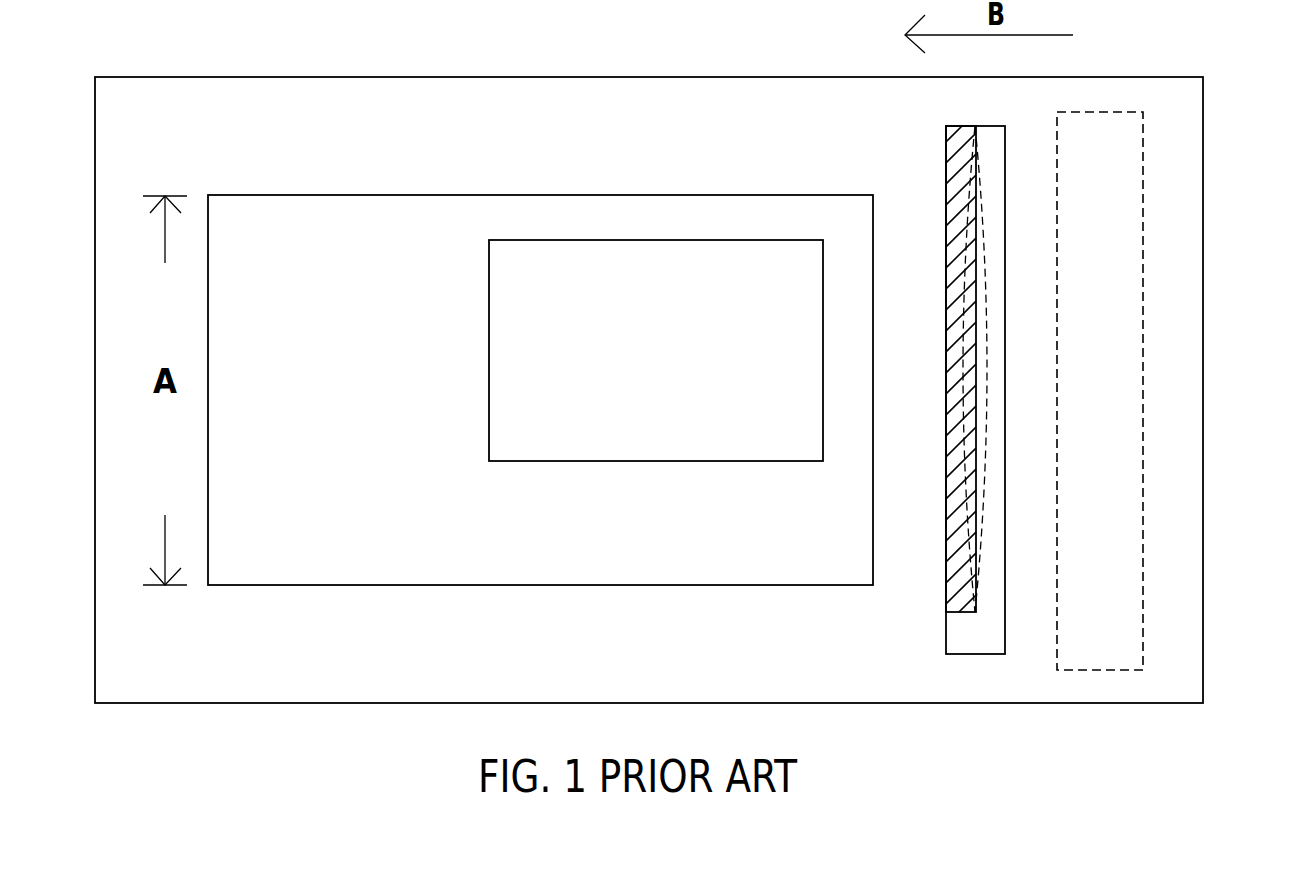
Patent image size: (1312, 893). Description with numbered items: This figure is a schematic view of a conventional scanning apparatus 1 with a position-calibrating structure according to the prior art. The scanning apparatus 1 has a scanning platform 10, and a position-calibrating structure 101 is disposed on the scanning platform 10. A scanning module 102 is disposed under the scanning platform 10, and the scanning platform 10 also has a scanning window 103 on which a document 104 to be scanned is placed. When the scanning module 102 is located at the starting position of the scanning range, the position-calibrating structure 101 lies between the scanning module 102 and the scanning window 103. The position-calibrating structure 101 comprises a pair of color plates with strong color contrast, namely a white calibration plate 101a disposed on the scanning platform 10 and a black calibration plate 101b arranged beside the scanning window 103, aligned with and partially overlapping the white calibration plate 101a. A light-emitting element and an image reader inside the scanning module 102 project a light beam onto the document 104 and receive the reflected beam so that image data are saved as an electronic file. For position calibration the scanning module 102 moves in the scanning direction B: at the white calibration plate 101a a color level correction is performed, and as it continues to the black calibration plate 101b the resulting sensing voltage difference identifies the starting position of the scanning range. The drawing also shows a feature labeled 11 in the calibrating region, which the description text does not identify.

The scanning apparatus 1 is at (1253, 40).
The scanning platform 10 is at (1203, 107).
The light beam 11 is at (980, 147).
The position-calibrating structure 101 is at (990, 447).
The white calibration plate 101a is at (993, 595).
The black calibration plate 101b is at (958, 592).
The scanning module 102 is at (1143, 221).
The scanning window 103 is at (572, 195).
The document 104 is at (676, 240).